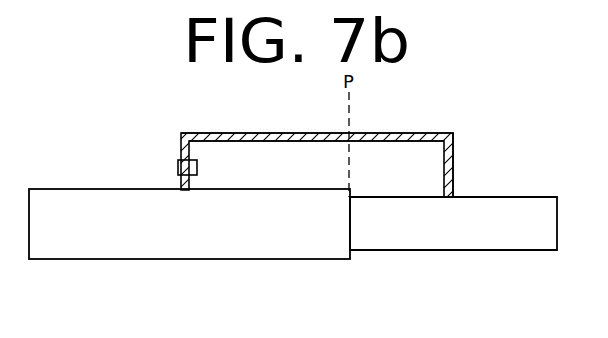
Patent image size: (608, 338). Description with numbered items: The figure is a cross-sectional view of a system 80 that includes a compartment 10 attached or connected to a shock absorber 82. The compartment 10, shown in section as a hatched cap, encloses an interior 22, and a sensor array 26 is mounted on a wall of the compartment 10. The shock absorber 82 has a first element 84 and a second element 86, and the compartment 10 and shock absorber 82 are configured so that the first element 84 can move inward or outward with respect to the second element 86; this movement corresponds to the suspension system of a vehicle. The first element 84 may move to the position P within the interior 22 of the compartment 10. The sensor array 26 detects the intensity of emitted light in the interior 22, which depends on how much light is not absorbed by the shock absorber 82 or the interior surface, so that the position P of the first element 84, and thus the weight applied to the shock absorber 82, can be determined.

The compartment 10 is at (237, 168).
The interior 22 is at (392, 157).
The sensor array 26 is at (177, 165).
The system 80 is at (477, 135).
The shock absorber 82 is at (350, 226).
The first element 84 is at (275, 232).
The second element 86 is at (478, 230).